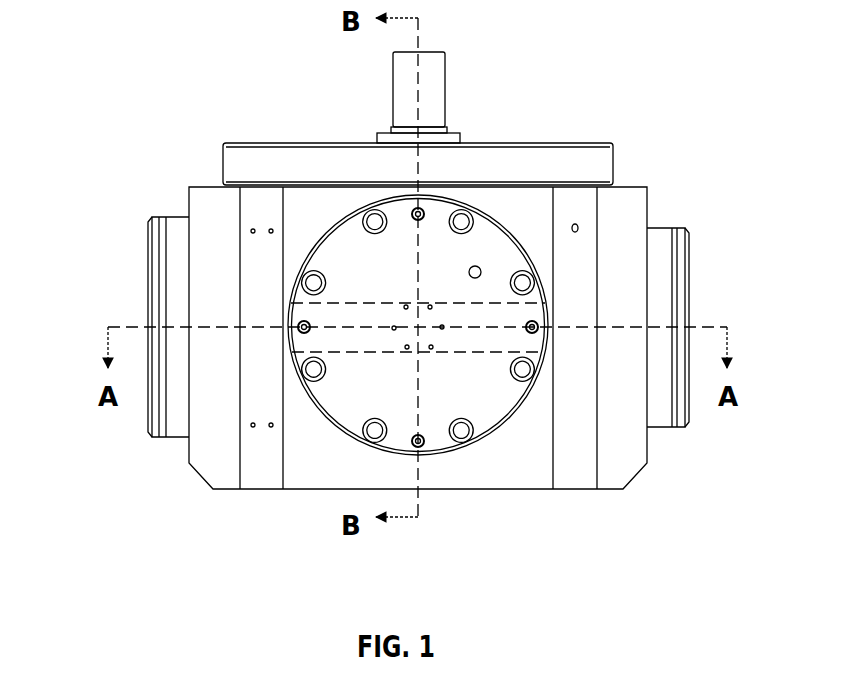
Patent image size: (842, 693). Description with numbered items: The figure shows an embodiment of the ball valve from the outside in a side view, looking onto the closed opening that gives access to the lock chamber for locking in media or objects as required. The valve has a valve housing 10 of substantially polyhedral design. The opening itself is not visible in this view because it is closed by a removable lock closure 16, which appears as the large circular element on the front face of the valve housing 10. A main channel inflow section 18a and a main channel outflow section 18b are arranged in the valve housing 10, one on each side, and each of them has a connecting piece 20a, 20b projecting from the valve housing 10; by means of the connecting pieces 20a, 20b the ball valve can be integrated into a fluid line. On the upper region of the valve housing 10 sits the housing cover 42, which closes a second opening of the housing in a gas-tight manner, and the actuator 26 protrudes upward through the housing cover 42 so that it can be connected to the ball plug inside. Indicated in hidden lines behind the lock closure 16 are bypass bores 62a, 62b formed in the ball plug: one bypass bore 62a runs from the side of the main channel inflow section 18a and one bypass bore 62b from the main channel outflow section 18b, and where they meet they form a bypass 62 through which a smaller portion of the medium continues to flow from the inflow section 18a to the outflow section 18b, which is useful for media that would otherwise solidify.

The valve housing 10 is at (641, 212).
The lock closure 16 is at (330, 387).
The main channel inflow section 18a is at (692, 276).
The main channel outflow section 18b is at (126, 264).
The connecting piece 20a is at (660, 273).
The connecting piece 20b is at (180, 223).
The actuator 26 is at (436, 87).
The housing cover 42 is at (603, 169).
The bypass 62 is at (459, 278).
The bypass bore 62a is at (473, 353).
The bypass bore 62b is at (365, 353).